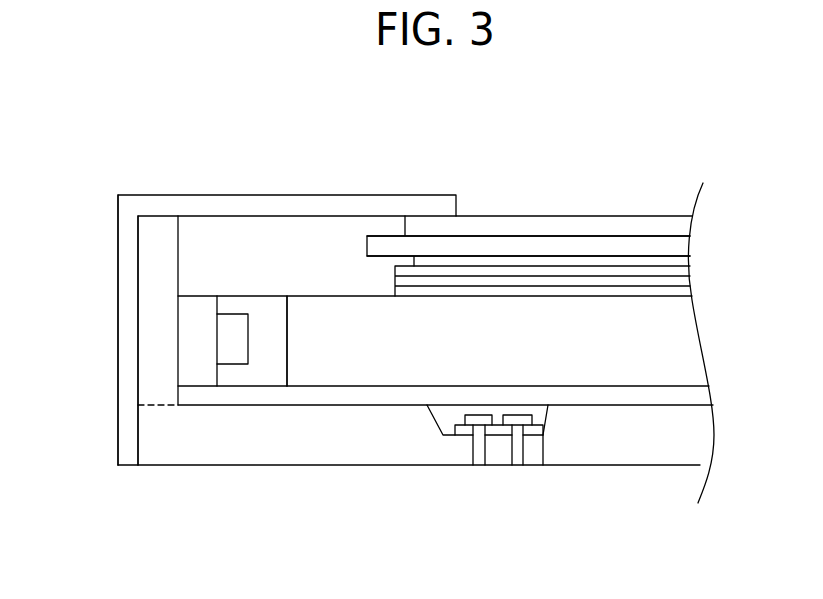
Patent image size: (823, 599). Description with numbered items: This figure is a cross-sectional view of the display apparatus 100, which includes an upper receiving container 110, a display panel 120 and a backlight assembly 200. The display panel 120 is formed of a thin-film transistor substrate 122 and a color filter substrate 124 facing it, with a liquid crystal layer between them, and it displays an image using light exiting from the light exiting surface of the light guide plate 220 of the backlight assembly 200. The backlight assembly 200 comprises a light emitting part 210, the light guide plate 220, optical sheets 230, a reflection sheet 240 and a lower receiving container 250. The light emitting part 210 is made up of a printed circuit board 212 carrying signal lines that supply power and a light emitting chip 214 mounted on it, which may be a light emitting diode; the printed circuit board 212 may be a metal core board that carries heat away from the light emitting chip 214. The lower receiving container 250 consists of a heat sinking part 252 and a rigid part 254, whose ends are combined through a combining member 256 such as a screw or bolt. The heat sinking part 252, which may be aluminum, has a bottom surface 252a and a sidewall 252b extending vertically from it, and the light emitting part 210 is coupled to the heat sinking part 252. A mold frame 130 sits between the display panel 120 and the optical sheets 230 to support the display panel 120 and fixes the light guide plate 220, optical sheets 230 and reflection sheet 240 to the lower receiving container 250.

The display apparatus 100 is at (660, 173).
The upper receiving container 110 is at (297, 194).
The mold frame 130 is at (225, 228).
The display panel 120 is at (579, 239).
The thin-film transistor substrate 122 is at (555, 246).
The color filter substrate 124 is at (688, 230).
The optical sheets 230 is at (716, 268).
The backlight assembly 200 is at (495, 368).
The light guide plate 220 is at (697, 346).
The reflection sheet 240 is at (472, 393).
The light emitting part 210 is at (153, 310).
The printed circuit board 212 is at (186, 366).
The light emitting chip 214 is at (227, 333).
The lower receiving container 250 is at (409, 391).
The heat sinking part 252 is at (186, 374).
The bottom surface 252a is at (223, 446).
The sidewall 252b is at (158, 395).
The rigid part 254 is at (598, 460).
The combining member 256 is at (487, 459).